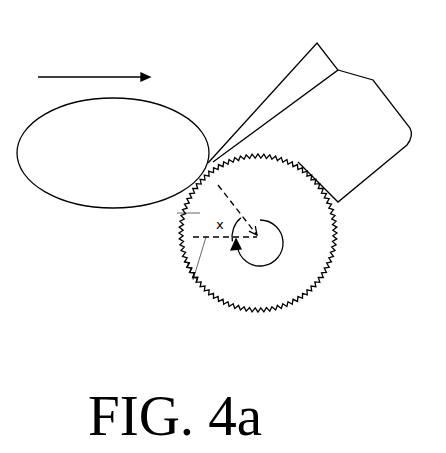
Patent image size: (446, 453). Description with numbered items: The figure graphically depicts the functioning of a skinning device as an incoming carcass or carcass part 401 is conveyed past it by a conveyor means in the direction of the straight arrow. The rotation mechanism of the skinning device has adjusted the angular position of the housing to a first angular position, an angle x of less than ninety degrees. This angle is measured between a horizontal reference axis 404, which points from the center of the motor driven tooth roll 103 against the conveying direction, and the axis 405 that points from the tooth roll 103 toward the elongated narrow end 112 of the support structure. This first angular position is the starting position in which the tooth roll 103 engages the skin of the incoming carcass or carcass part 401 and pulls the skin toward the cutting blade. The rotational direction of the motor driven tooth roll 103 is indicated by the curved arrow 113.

The motor driven tooth roll 103 is at (287, 198).
The elongated narrow end of the support structure 112 is at (208, 158).
The arrow indicating rotational direction of the tooth roll 113 is at (254, 260).
The carcass or carcass part 401 is at (128, 165).
The horizontal reference axis 404 is at (160, 284).
The axis from tooth roll towards elongated narrow end 405 is at (139, 246).